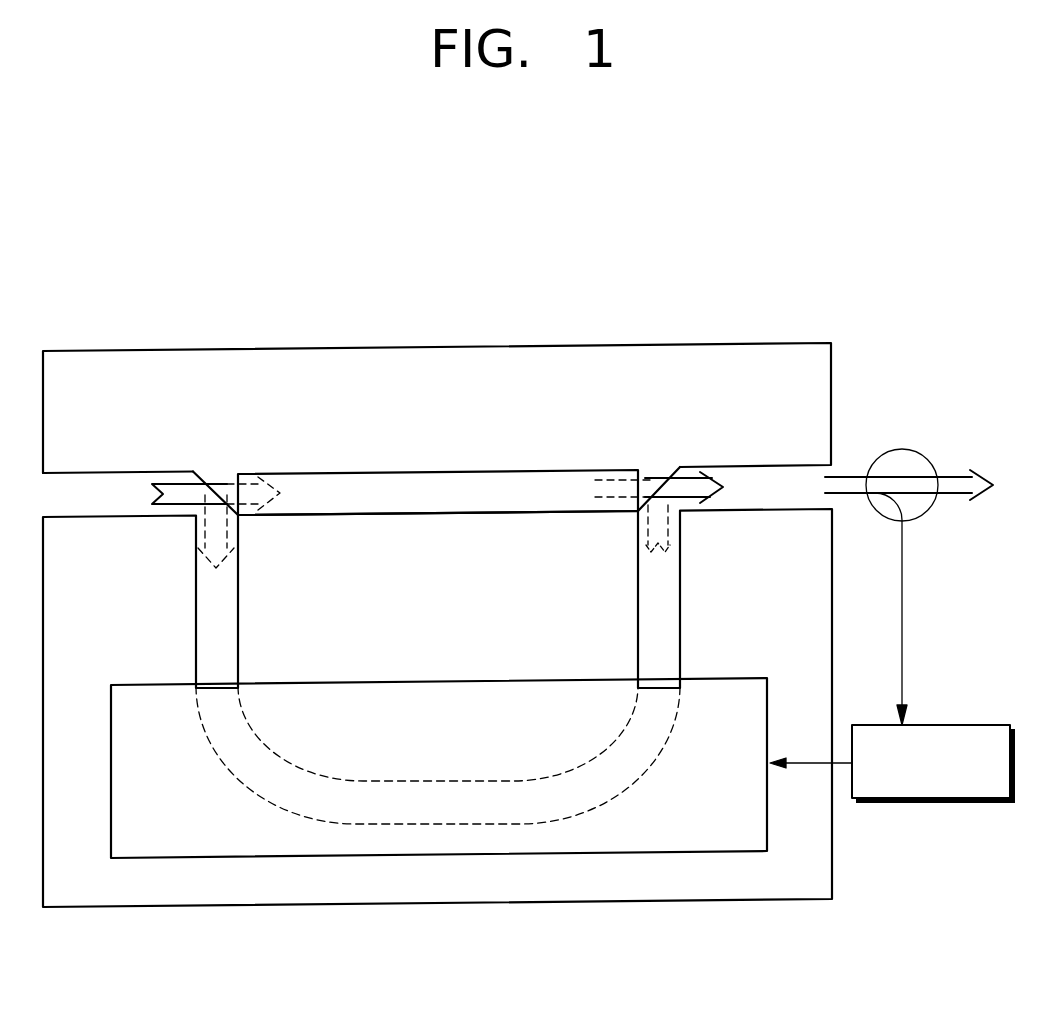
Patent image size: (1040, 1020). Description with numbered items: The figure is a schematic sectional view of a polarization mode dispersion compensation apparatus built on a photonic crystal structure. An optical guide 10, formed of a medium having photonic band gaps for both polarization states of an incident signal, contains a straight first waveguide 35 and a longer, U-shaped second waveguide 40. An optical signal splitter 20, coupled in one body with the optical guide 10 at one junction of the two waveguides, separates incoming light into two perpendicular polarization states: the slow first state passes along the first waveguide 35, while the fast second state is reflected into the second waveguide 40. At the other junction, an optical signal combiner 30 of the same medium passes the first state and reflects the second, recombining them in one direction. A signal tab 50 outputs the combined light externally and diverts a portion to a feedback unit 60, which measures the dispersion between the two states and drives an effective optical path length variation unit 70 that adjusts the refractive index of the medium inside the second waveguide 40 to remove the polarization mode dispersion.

The optical guide 10 is at (792, 360).
The optical signal splitter 20 is at (220, 478).
The optical signal combiner 30 is at (655, 477).
The first waveguide 35 is at (450, 484).
The second waveguide 40 is at (224, 653).
The signal tab 50 is at (902, 449).
The feedback unit 60 is at (980, 724).
The effective optical path length variation unit 70 is at (477, 682).